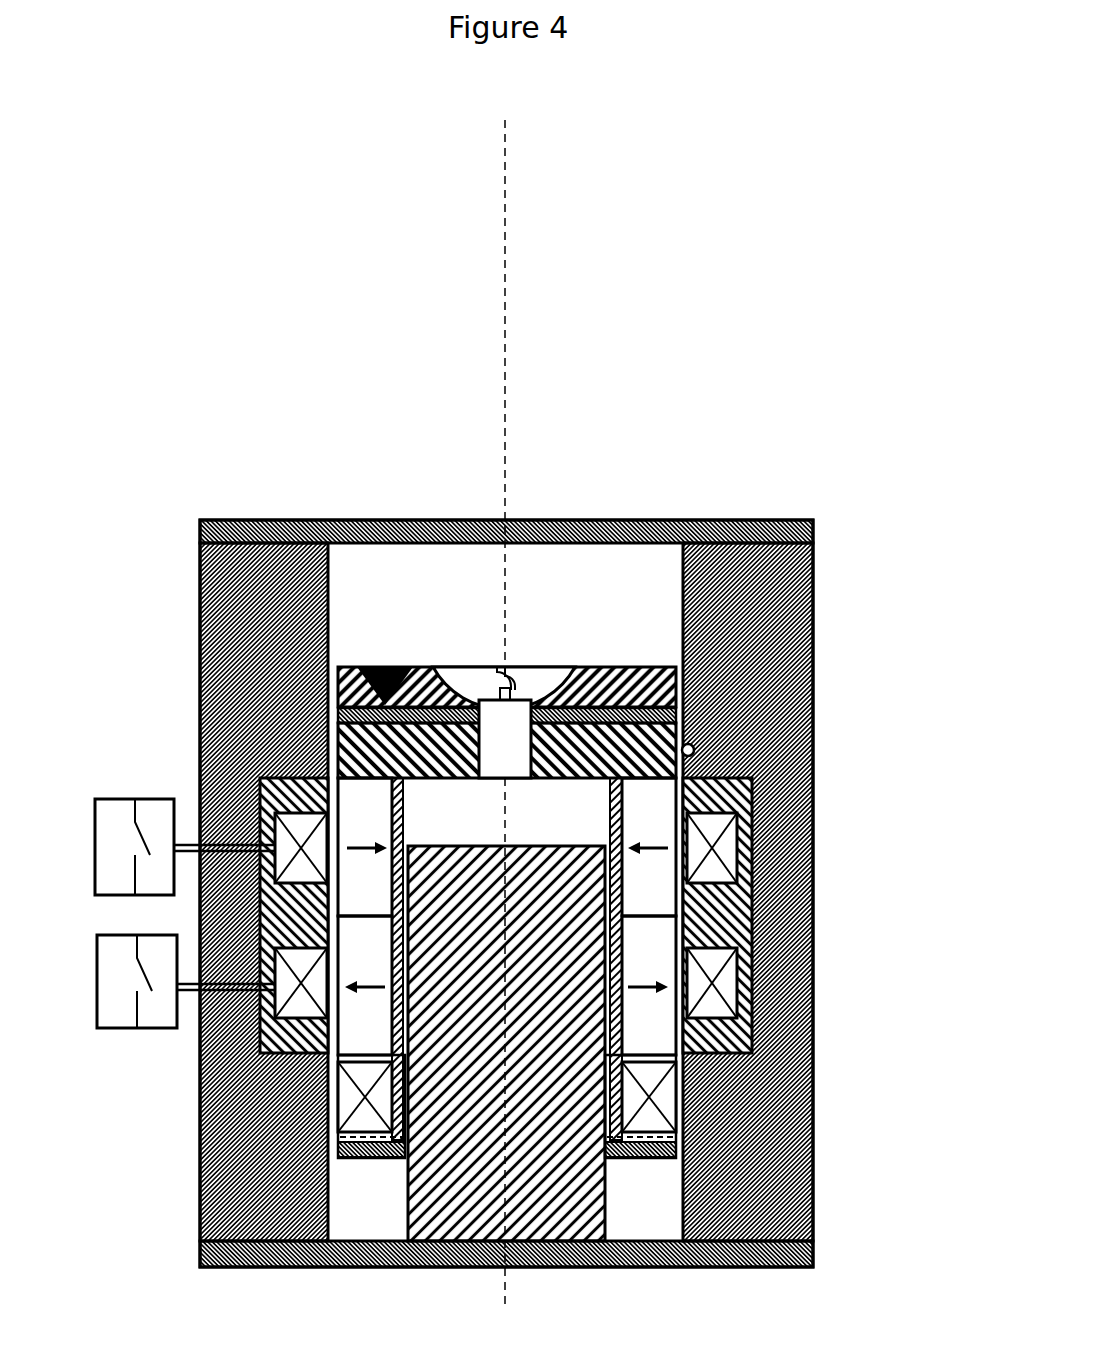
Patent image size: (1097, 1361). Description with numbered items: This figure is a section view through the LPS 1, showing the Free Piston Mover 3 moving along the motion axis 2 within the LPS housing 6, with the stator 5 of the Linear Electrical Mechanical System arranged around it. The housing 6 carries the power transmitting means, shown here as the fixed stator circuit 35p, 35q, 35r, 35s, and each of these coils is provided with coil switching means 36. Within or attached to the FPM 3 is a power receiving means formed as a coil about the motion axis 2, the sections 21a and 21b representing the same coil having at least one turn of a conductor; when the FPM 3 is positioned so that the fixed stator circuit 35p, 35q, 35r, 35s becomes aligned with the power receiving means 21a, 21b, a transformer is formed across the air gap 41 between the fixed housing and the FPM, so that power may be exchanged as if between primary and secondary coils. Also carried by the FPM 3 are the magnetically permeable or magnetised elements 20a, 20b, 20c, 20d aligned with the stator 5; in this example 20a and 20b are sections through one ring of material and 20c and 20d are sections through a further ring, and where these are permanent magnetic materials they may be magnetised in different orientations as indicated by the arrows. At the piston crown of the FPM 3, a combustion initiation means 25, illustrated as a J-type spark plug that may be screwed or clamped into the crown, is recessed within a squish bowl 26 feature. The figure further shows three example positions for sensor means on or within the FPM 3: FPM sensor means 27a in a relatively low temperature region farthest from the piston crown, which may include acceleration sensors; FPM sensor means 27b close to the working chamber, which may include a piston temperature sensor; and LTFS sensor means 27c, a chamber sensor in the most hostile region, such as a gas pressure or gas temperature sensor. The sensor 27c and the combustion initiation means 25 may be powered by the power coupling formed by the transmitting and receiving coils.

The LPS 1 is at (766, 472).
The motion axis 2 is at (505, 365).
The Free Piston Mover (FPM) 3 is at (375, 757).
The stator 5 is at (752, 912).
The LPS housing 6 is at (745, 592).
The magnetically permeable or magnetised element 20a is at (365, 847).
The magnetically permeable or magnetised element 20b is at (649, 847).
The magnetically permeable or magnetised element 20c is at (365, 985).
The magnetically permeable or magnetised element 20d is at (649, 985).
The power receiving means 21a is at (337, 1100).
The power receiving means 21b is at (676, 1095).
The combustion initiation means 25 is at (502, 752).
The squish bowl 26 is at (548, 680).
The FPM sensor means 27a is at (787, 1253).
The FPM sensor means 27b is at (678, 714).
The LTFS sensor means 27c is at (385, 665).
The fixed stator circuit 35p is at (295, 1013).
The fixed stator circuit 35q is at (715, 1005).
The fixed stator circuit 35r is at (292, 822).
The fixed stator circuit 35s is at (730, 837).
The coil switching means 36 is at (185, 913).
The air gap 41 is at (693, 750).